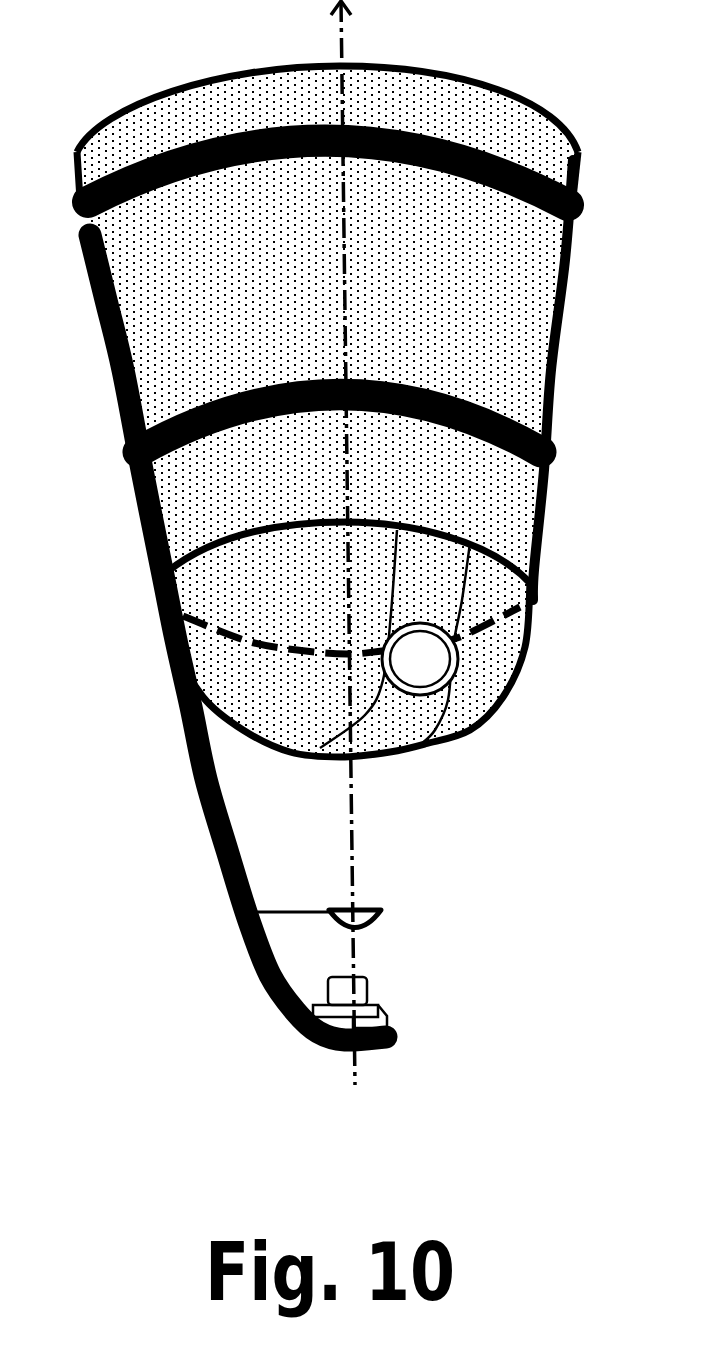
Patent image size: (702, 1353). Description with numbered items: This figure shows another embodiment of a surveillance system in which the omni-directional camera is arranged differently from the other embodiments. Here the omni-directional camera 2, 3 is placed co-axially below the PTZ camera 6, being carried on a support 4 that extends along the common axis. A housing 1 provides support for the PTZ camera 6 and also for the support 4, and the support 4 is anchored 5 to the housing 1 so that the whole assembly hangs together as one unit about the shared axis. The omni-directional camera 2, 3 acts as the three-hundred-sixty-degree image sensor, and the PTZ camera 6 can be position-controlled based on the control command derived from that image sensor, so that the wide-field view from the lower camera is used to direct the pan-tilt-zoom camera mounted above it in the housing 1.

The housing 1 is at (327, 333).
The omni-directional camera 2 is at (380, 1000).
The omni-directional camera 3 is at (335, 895).
The support 4 is at (238, 637).
The anchor 5 is at (339, 392).
The PTZ camera 6 is at (348, 648).